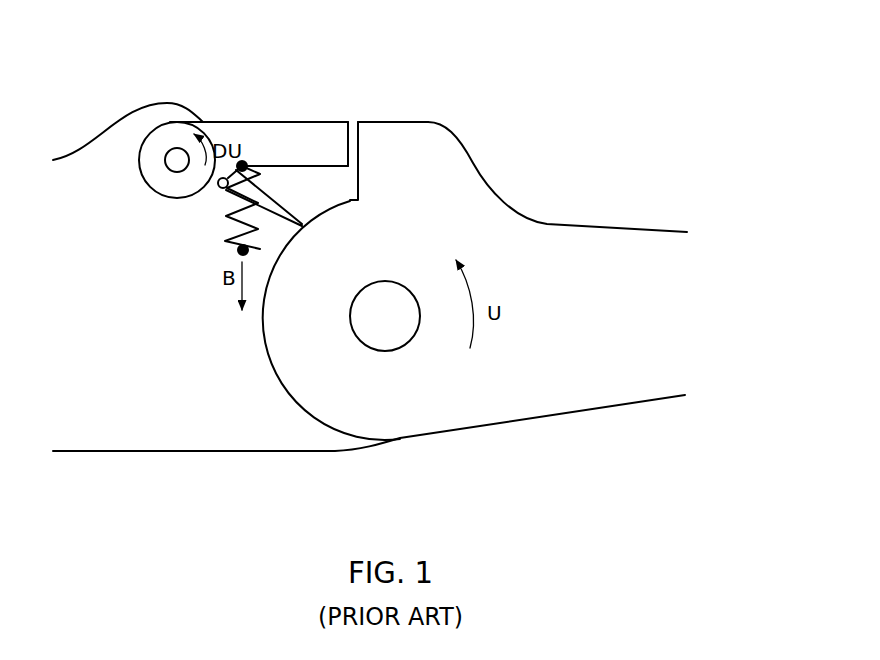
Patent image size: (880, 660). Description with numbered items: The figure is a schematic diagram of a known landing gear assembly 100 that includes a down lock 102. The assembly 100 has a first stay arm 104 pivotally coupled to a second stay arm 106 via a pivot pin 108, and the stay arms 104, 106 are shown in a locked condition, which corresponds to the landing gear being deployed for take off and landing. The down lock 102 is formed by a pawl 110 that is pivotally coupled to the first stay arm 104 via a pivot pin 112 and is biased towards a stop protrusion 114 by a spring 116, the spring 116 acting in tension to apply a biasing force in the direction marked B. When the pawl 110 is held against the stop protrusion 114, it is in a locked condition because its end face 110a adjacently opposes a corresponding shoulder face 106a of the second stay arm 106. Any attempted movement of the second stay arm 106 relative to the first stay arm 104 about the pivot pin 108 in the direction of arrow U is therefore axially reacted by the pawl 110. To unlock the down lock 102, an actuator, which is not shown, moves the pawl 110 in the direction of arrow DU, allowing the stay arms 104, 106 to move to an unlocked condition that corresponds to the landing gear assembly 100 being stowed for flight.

The landing gear assembly 100 is at (622, 86).
The down lock 102 is at (304, 98).
The first stay arm 104 is at (168, 442).
The second stay arm 106 is at (618, 405).
The shoulder face 106a is at (362, 160).
The pivot pin 108 is at (400, 348).
The pawl 110 is at (263, 122).
The end face 110a is at (350, 145).
The pivot pin 112 is at (170, 151).
The stop protrusion 114 is at (222, 188).
The spring 116 is at (257, 227).